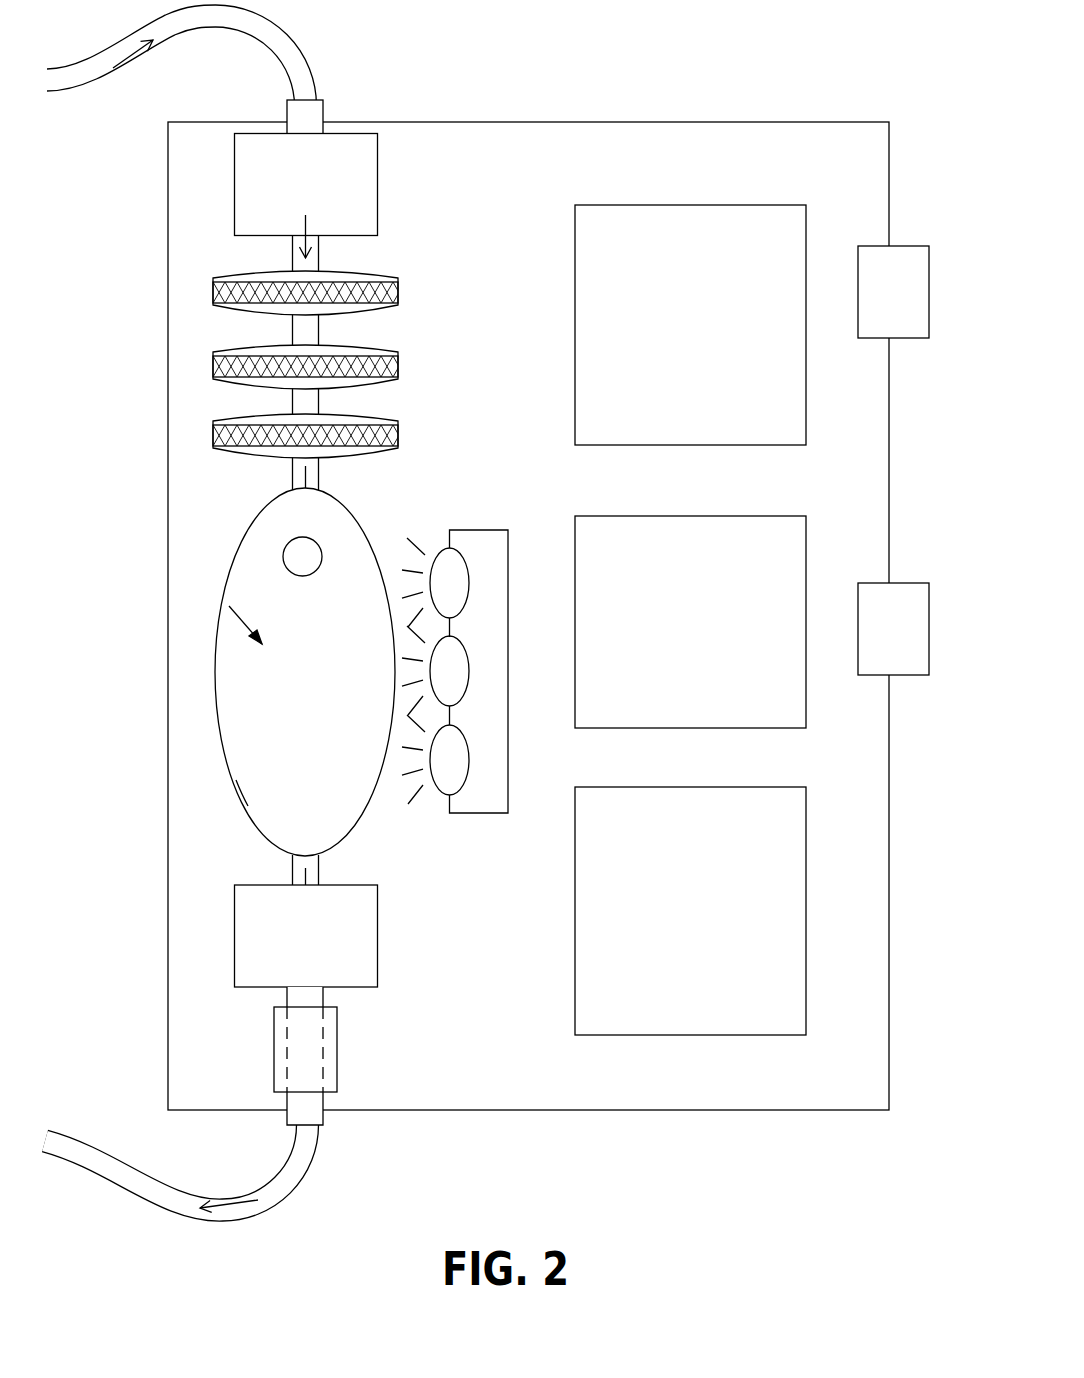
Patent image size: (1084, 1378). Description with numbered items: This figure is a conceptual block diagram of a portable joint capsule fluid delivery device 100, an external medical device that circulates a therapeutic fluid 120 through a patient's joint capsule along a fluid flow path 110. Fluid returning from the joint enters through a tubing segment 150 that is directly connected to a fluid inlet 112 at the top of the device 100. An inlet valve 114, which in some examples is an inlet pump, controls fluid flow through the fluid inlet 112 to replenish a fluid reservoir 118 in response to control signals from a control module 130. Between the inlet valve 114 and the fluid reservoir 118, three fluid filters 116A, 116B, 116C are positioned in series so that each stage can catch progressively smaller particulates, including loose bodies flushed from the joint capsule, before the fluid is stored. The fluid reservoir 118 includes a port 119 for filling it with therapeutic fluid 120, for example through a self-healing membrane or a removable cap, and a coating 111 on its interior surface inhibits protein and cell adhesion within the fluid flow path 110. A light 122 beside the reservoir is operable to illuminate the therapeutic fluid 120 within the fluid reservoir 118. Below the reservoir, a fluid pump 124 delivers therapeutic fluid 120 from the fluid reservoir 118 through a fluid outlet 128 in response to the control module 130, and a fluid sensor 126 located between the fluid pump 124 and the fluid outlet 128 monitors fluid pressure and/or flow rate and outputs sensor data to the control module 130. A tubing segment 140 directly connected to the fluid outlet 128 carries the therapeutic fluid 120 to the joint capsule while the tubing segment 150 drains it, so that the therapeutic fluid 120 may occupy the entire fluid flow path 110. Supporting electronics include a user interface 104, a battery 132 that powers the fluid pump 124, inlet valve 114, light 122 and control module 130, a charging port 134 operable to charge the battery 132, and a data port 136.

The device 100 is at (559, 1084).
The user interface 104 is at (673, 937).
The fluid flow path 110 is at (118, 56).
The coating 111 is at (250, 813).
The fluid inlet 112 is at (322, 110).
The inlet valve 114 is at (327, 193).
The fluid filter 116A is at (398, 278).
The fluid filter 116B is at (398, 352).
The fluid filter 116C is at (398, 421).
The fluid reservoir 118 is at (328, 698).
The port 119 is at (292, 558).
The therapeutic fluid 120 is at (231, 614).
The light 122 is at (505, 803).
The fluid pump 124 is at (330, 960).
The fluid sensor 126 is at (337, 1072).
The fluid outlet 128 is at (325, 1117).
The control module 130 is at (671, 661).
The battery 132 is at (671, 351).
The charging port 134 is at (897, 257).
The data port 136 is at (895, 598).
The tubing segment 140 is at (143, 1180).
The tubing segment 150 is at (288, 40).